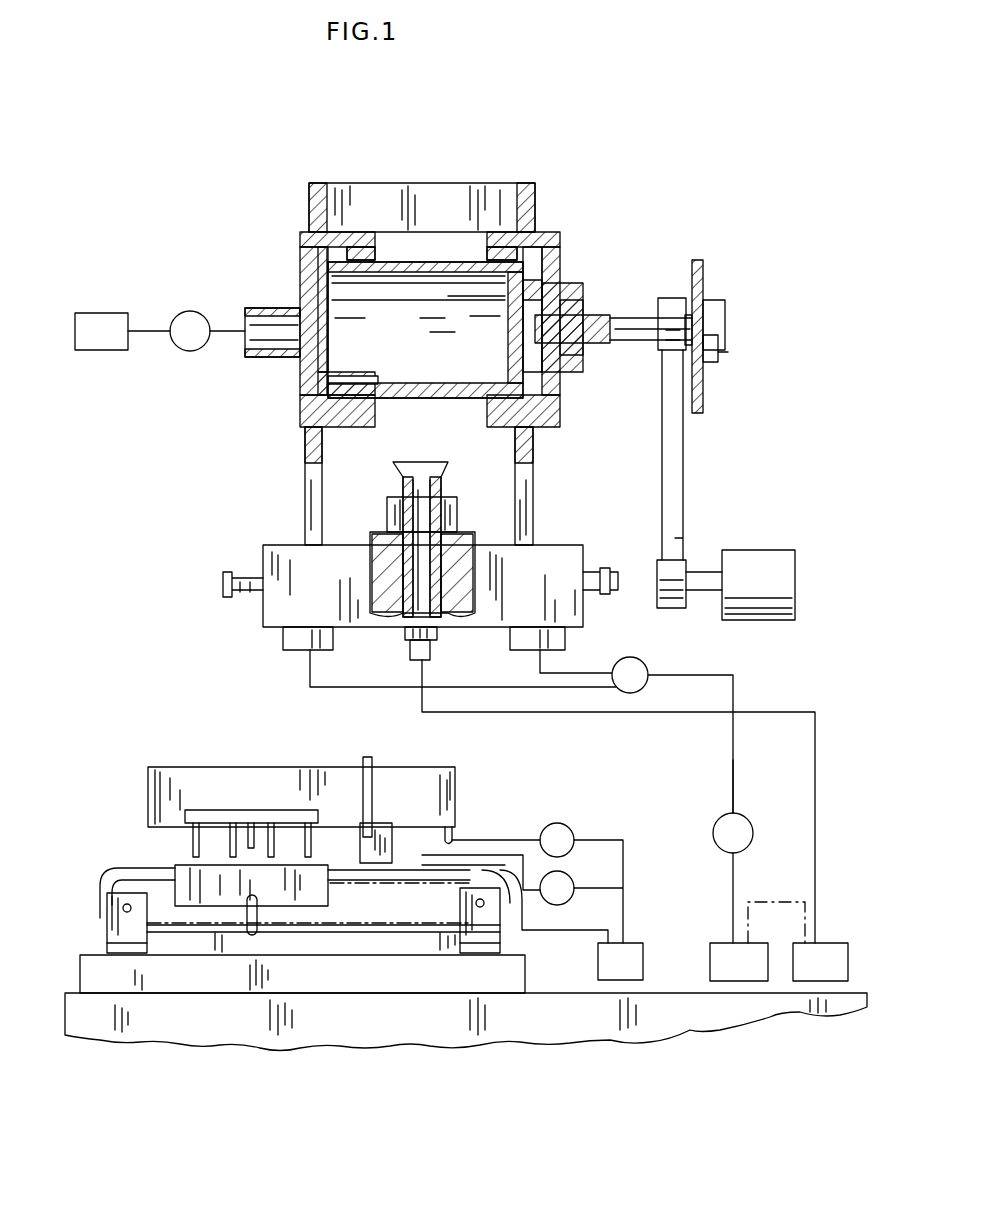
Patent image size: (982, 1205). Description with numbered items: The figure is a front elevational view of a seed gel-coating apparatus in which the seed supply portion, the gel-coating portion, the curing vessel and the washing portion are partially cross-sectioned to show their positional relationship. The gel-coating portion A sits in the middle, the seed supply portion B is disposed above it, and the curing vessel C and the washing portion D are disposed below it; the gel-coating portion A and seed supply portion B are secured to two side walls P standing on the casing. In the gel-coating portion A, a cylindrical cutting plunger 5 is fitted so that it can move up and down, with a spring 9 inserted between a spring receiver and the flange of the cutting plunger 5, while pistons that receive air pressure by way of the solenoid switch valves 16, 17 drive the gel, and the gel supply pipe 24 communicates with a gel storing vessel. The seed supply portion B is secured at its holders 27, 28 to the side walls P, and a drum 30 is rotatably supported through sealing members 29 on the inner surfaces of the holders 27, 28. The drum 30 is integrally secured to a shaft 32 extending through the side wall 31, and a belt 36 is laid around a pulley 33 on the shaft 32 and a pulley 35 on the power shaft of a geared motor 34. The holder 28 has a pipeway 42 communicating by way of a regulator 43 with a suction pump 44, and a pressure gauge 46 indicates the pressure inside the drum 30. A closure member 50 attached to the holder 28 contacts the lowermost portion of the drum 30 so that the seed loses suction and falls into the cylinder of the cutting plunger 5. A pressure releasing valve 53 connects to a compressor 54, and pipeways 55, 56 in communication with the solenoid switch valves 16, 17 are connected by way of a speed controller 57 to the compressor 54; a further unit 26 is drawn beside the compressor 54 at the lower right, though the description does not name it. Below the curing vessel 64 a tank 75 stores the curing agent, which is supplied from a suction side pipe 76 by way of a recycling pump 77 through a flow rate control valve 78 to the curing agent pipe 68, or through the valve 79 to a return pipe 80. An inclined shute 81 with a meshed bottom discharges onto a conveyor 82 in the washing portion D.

The cutting plunger 5 is at (405, 487).
The spring 9 is at (387, 512).
The solenoid switch valve 16 is at (560, 636).
The solenoid switch valve 17 is at (285, 640).
The gel supply pipe 24 is at (410, 655).
The control unit 26 is at (824, 943).
The holder 27 is at (550, 232).
The holder 28 is at (305, 240).
The sealing members 29 is at (360, 248).
The drum 30 is at (437, 262).
The side wall 31 is at (540, 292).
The shaft 32 is at (590, 318).
The pulley 33 is at (703, 300).
The geared motor 34 is at (756, 550).
The pulley 35 is at (682, 555).
The belt 36 is at (683, 455).
The pipeway 42 is at (258, 308).
The regulator 43 is at (192, 311).
The suction pump 44 is at (108, 313).
The pressure gauge 46 is at (733, 788).
The closure member 50 is at (405, 370).
The pressure releasing valve 53 is at (740, 818).
The compressor 54 is at (725, 943).
The pipeway 55 is at (590, 678).
The pipeway 56 is at (310, 687).
The speed controller 57 is at (648, 670).
The vessel 64 is at (150, 770).
The curing agent pipe 68 is at (495, 840).
The tank 75 is at (175, 868).
The suction side pipe 76 is at (575, 933).
The recycling pump 77 is at (645, 965).
The flow rate control valve 78 is at (545, 825).
The valve 79 is at (578, 874).
The return pipe 80 is at (455, 855).
The inclined shute 81 is at (393, 915).
The conveyor 82 is at (197, 933).
The gel-coating portion A is at (258, 520).
The seed supply portion B is at (580, 245).
The curing vessel C is at (182, 752).
The washing portion D is at (318, 835).
The side walls P is at (305, 490).